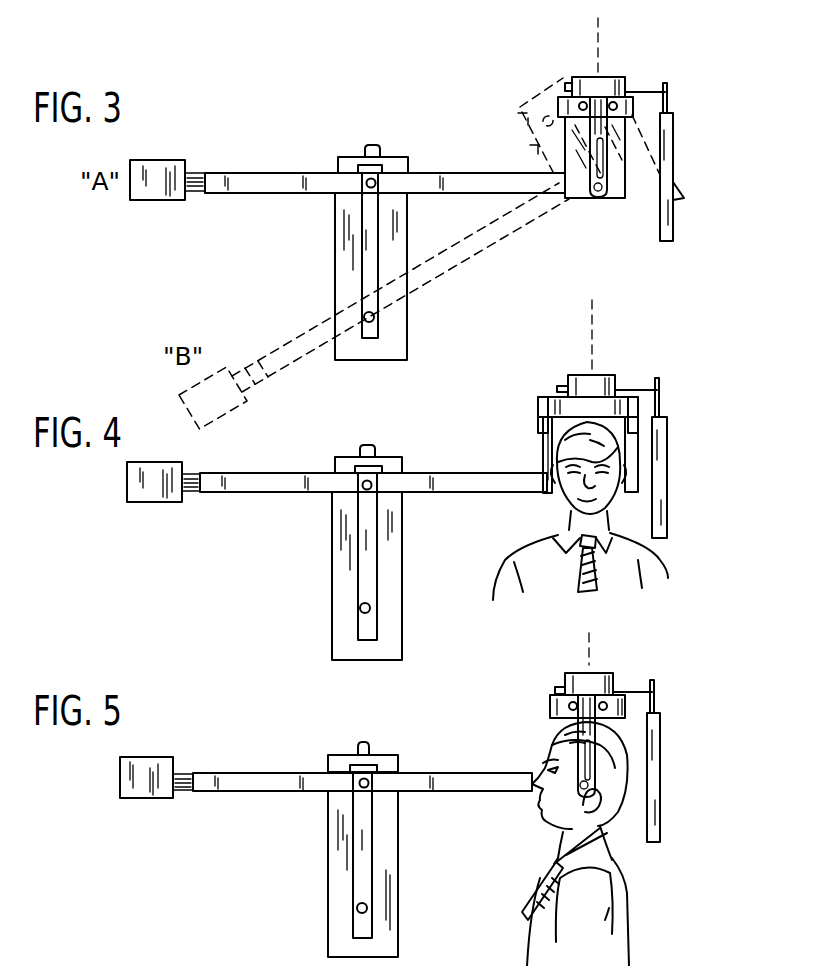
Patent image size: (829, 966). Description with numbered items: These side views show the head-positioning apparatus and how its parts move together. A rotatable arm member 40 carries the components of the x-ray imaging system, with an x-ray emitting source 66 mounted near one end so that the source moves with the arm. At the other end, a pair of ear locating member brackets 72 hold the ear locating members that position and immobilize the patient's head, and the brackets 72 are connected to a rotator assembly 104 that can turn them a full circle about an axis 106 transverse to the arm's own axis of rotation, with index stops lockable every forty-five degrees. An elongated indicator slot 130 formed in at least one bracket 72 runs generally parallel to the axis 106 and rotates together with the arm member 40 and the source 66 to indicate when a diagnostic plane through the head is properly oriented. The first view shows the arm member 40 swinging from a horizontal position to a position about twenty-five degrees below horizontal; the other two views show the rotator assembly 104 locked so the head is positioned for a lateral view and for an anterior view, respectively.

In FIG. 3, the arm member 40 is at (283, 194).
In FIG. 4, the arm member 40 is at (278, 493).
In FIG. 5, the arm member 40 is at (285, 784).
In FIG. 3, the x-ray emitting source 66 is at (167, 200).
In FIG. 4, the x-ray emitting source 66 is at (152, 505).
In FIG. 5, the x-ray emitting source 66 is at (148, 797).
In FIG. 3, the ear locating member brackets 72 is at (597, 200).
In FIG. 4, the ear locating member brackets 72 is at (545, 460).
In FIG. 5, the ear locating member brackets 72 is at (587, 770).
In FIG. 3, the rotator assembly 104 is at (562, 108).
In FIG. 4, the rotator assembly 104 is at (533, 408).
In FIG. 5, the rotator assembly 104 is at (555, 706).
In FIG. 3, the axis 106 is at (600, 36).
In FIG. 4, the axis 106 is at (593, 322).
In FIG. 5, the axis 106 is at (591, 653).
In FIG. 3, the indicator slot 130 is at (607, 160).
In FIG. 4, the indicator slot 130 is at (641, 458).
In FIG. 5, the indicator slot 130 is at (605, 808).